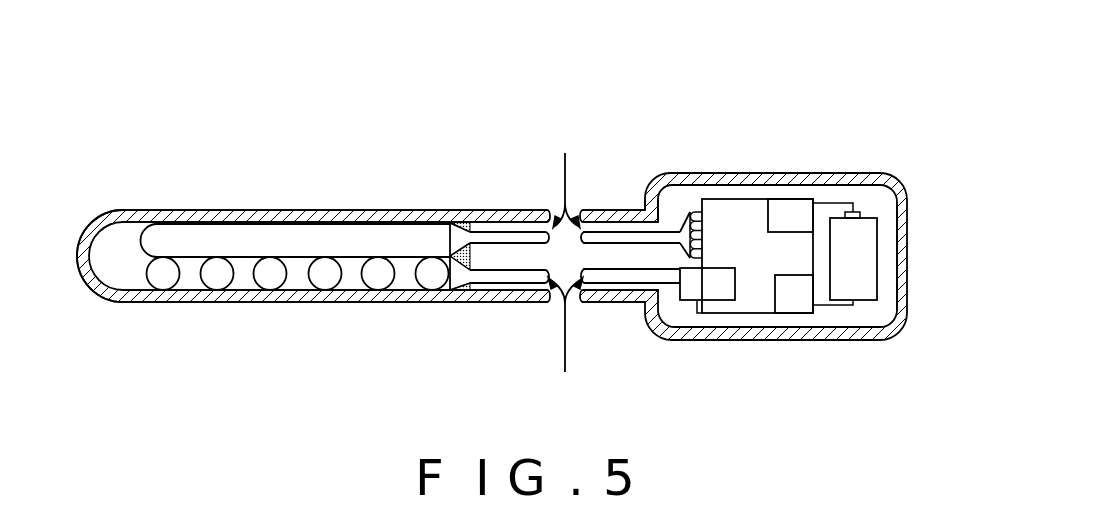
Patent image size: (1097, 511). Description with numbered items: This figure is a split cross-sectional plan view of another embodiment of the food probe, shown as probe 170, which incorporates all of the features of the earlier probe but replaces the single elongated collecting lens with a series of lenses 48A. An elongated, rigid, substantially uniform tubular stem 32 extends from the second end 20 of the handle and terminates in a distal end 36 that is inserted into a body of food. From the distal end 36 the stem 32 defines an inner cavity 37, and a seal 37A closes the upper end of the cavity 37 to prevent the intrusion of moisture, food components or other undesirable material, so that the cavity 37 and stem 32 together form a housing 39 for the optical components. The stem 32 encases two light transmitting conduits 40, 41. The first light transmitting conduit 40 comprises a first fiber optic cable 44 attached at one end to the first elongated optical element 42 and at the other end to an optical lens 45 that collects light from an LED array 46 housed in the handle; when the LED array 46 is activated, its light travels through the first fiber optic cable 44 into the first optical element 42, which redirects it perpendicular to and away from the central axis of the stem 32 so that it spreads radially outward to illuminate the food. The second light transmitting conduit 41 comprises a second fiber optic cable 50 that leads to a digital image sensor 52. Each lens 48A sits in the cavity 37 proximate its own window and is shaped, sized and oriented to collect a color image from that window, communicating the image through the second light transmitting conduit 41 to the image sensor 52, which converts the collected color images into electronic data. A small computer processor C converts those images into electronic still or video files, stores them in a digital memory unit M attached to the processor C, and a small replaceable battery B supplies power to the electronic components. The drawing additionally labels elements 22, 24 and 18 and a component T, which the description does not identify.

The probe 170 is at (288, 125).
The distal end 36 is at (217, 172).
The inner cavity 37 is at (125, 243).
The seal 37A is at (465, 222).
The tubular stem 32 is at (273, 212).
The first elongated optical element 42 is at (345, 240).
The lenses 48A is at (432, 278).
The first fiber optic cable 44 is at (490, 240).
The second fiber optic cable 50 is at (495, 277).
The light transmitting conduit 40 is at (567, 180).
The light transmitting conduit 41 is at (565, 337).
The second end of the handle 20 is at (645, 207).
The optical lens 45 is at (683, 230).
The LED array 46 is at (688, 226).
The housing top wall 22 is at (722, 173).
The housing bottom wall 24 is at (753, 338).
The control body housing 18 is at (907, 222).
The digital image sensor 52 is at (718, 288).
The computer processor C is at (737, 228).
The transmitter T is at (792, 213).
The digital memory unit M is at (799, 300).
The battery B is at (847, 290).
The housing 39 is at (126, 312).